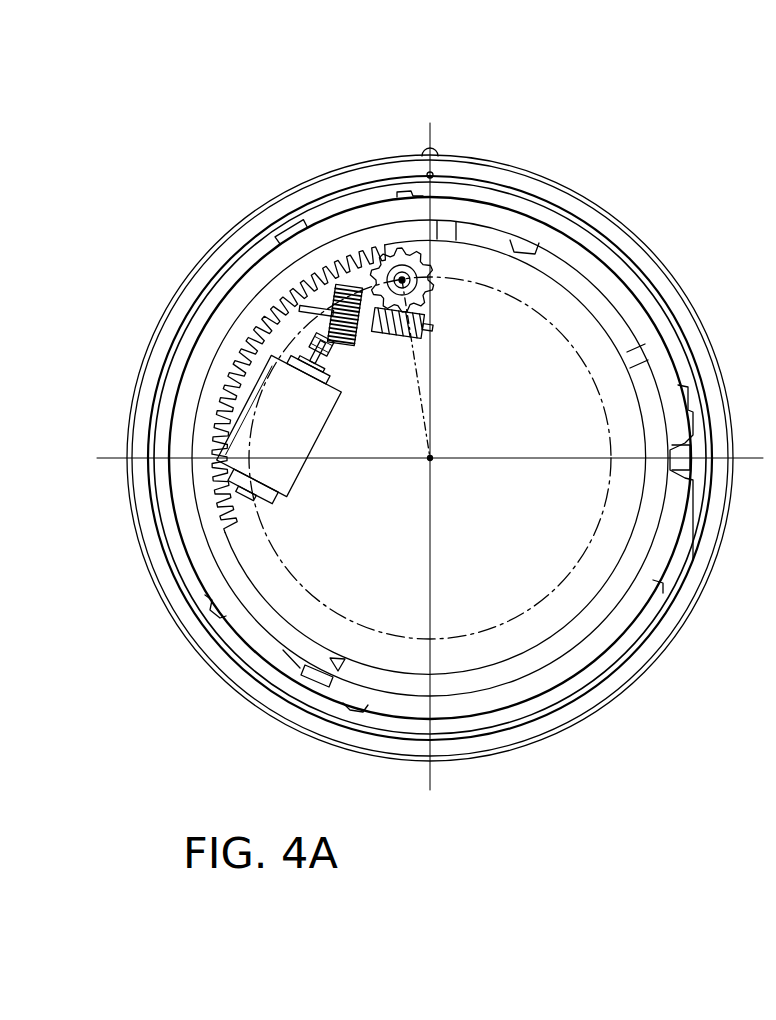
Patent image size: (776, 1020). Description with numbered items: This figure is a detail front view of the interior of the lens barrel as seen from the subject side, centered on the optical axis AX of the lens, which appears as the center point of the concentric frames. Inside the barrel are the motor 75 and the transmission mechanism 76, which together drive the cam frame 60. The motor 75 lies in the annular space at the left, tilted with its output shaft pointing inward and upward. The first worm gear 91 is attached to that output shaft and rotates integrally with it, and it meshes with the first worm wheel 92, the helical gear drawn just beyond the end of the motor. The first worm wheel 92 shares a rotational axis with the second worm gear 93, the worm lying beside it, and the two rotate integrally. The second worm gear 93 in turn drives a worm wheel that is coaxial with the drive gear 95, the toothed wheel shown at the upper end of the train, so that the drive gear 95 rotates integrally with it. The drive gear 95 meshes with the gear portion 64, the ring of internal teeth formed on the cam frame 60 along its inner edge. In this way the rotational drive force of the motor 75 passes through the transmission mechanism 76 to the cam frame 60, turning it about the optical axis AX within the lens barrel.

The cam frame 60 is at (252, 600).
The gear portion 64 is at (233, 383).
The motor 75 is at (273, 440).
The transmission mechanism 76 is at (310, 63).
The first worm gear 91 is at (304, 334).
The first worm wheel 92 is at (340, 285).
The second worm gear 93 is at (372, 308).
The drive gear 95 is at (412, 248).
The optical axis AX is at (430, 458).